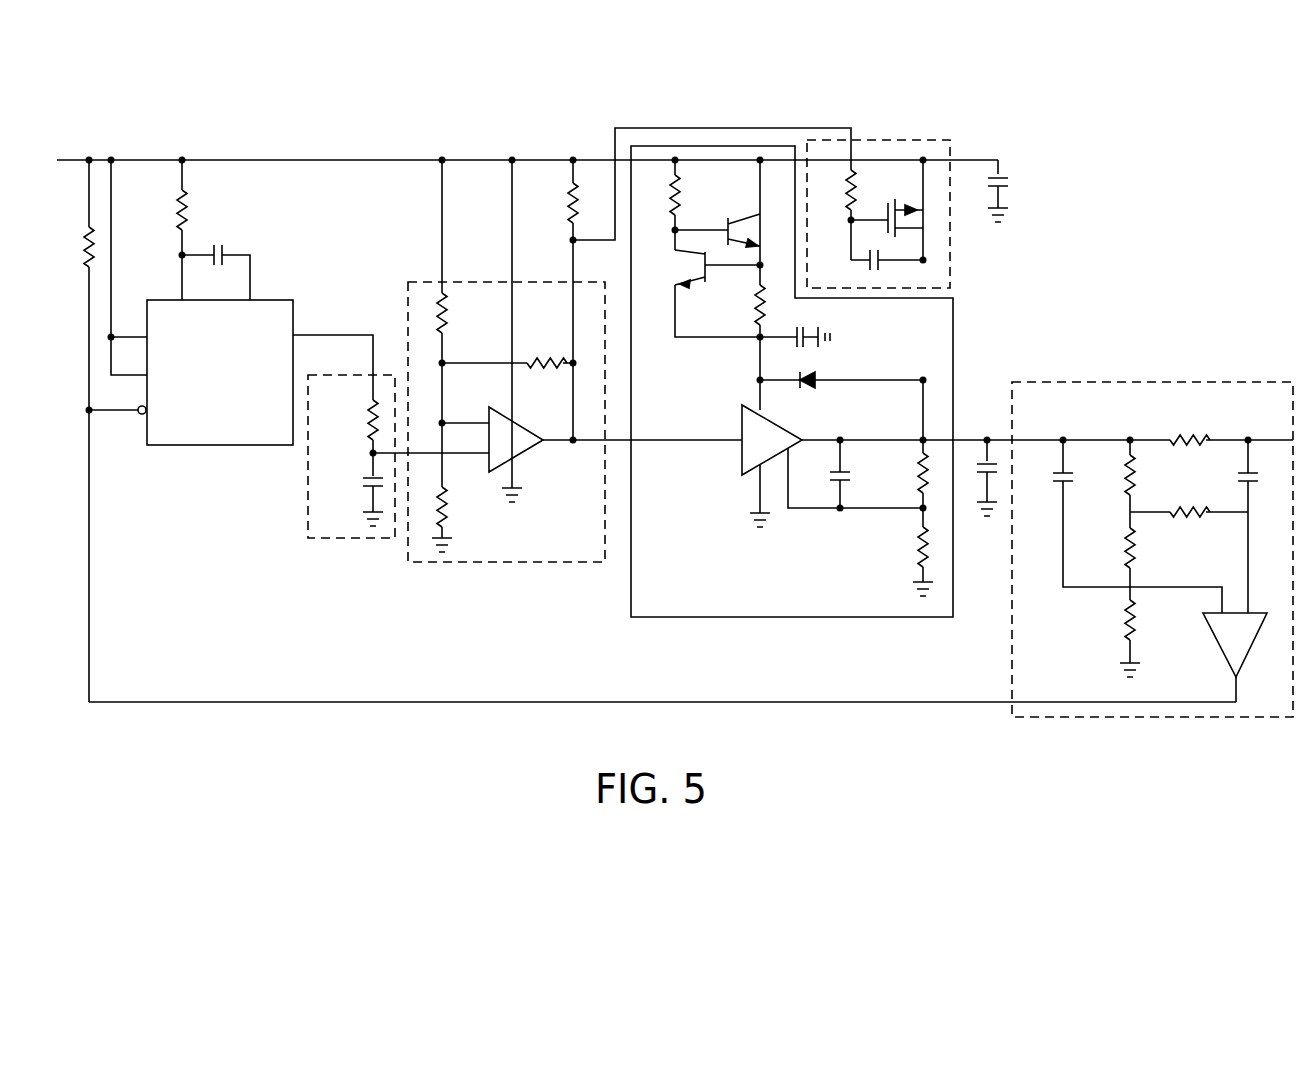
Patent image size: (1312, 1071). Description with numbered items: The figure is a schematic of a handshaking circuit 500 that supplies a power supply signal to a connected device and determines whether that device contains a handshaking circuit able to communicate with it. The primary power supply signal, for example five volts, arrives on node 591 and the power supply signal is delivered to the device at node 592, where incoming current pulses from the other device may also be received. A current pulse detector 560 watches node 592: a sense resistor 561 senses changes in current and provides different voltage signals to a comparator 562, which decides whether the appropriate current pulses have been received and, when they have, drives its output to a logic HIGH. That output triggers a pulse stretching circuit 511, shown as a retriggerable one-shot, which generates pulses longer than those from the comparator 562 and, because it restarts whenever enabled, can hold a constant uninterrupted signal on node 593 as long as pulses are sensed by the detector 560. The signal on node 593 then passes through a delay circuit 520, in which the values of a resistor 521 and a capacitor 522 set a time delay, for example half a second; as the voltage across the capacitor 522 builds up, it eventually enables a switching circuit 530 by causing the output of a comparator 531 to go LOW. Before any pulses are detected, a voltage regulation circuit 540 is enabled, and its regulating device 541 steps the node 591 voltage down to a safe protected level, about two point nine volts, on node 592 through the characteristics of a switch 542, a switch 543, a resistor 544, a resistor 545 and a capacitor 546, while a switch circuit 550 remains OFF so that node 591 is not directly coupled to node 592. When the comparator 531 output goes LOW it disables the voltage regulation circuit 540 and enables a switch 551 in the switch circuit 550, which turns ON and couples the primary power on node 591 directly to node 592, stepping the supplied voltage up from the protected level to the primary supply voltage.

The handshaking circuit 500 is at (716, 116).
The pulse stretching circuit 511 is at (268, 297).
The delay circuit 520 is at (351, 433).
The resistor 521 is at (366, 412).
The capacitor 522 is at (368, 478).
The switching circuit 530 is at (575, 361).
The comparator 531 is at (512, 411).
The voltage regulation circuit 540 is at (962, 408).
The device 541 is at (742, 416).
The switch 542 is at (726, 221).
The switch 543 is at (672, 248).
The resistor 544 is at (681, 203).
The resistor 545 is at (771, 300).
The capacitor 546 is at (803, 382).
The switch circuit 550 is at (879, 187).
The switch 551 is at (886, 214).
The current pulse detector 560 is at (1152, 523).
The sense resistor 561 is at (1197, 414).
The comparator 562 is at (1256, 612).
The node 591 is at (62, 158).
The node 592 is at (1255, 437).
The node 593 is at (343, 330).